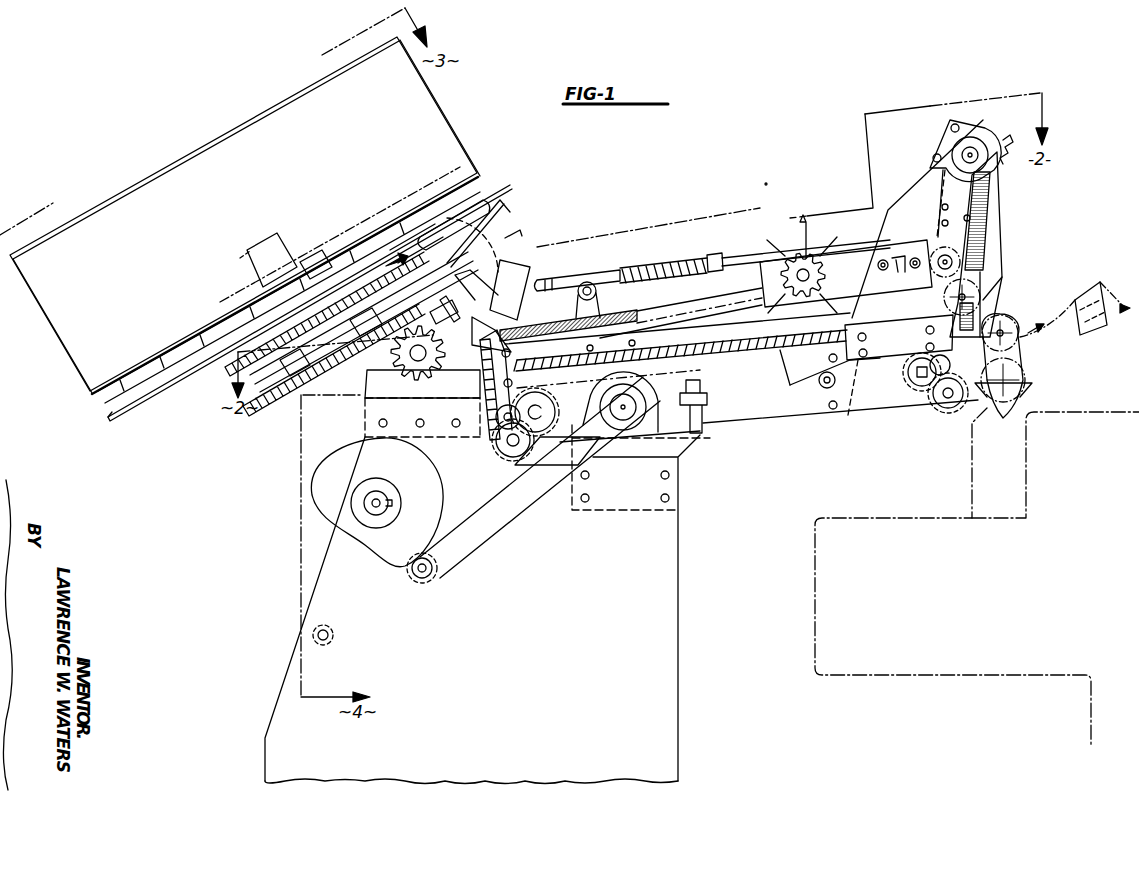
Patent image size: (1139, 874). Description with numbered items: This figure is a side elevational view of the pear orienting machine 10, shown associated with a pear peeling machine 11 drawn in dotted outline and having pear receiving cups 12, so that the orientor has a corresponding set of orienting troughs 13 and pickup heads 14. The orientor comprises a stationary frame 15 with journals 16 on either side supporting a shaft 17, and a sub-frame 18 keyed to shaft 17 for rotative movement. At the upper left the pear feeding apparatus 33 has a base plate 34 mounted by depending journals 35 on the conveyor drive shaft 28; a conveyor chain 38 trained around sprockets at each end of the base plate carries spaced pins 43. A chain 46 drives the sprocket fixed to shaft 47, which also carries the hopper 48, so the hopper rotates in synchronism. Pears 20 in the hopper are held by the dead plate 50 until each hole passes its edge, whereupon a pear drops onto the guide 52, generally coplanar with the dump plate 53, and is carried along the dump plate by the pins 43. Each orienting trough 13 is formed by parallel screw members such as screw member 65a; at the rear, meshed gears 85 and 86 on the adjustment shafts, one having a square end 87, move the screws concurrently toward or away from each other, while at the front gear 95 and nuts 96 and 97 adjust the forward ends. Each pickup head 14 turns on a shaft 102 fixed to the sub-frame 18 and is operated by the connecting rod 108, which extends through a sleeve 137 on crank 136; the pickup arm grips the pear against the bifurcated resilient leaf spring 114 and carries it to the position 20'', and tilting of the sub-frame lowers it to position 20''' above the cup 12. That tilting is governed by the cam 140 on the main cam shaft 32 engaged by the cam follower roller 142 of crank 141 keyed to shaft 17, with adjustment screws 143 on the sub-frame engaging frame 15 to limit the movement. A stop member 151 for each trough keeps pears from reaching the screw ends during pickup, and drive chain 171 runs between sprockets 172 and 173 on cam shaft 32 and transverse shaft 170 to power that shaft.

The pear orienting machine 10 is at (768, 182).
The pear peeling machine 11 is at (935, 520).
The pear receiving cup 12 is at (1032, 383).
The orienting trough 13 is at (548, 318).
The pickup head 14 is at (1000, 226).
The stationary frame 15 is at (685, 618).
The journal 16 is at (596, 392).
The shaft 17 is at (625, 400).
The sub-frame 18 is at (914, 190).
The pear 20 is at (440, 213).
The pear position 20'' is at (1009, 279).
The pear position 20''' is at (1030, 317).
The conveyor drive shaft 28 is at (425, 362).
The main cam shaft 32 is at (376, 488).
The pear feeding apparatus 33 is at (113, 421).
The base plate 34 is at (285, 365).
The depending journal 35 is at (438, 316).
The conveyor chain 38 is at (340, 275).
The pin 43 is at (472, 213).
The chain 46 is at (255, 412).
The shaft 47 is at (265, 236).
The hopper 48 is at (252, 118).
The dead plate 50 is at (170, 388).
The guide 52 is at (518, 232).
The dump plate 53 is at (484, 318).
The screw member 65a is at (748, 350).
The gear 85 is at (528, 410).
The gear 86 is at (513, 458).
The square end 87 is at (530, 430).
The gear 95 is at (915, 383).
The nut 96 is at (930, 402).
The nut 97 is at (944, 412).
The shaft 102 is at (975, 150).
The connecting rod 108 is at (730, 252).
The bifurcated resilient leaf spring 114 is at (1000, 258).
The crank 136 is at (585, 318).
The sleeve 137 is at (608, 272).
The cam 140 is at (428, 480).
The crank 141 is at (502, 512).
The cam follower roller 142 is at (432, 576).
The adjustment screw 143 is at (707, 425).
The stop member 151 is at (852, 420).
The shaft 170 is at (815, 276).
The drive chain 171 is at (698, 295).
The sprocket 172 is at (372, 382).
The sprocket 173 is at (818, 258).